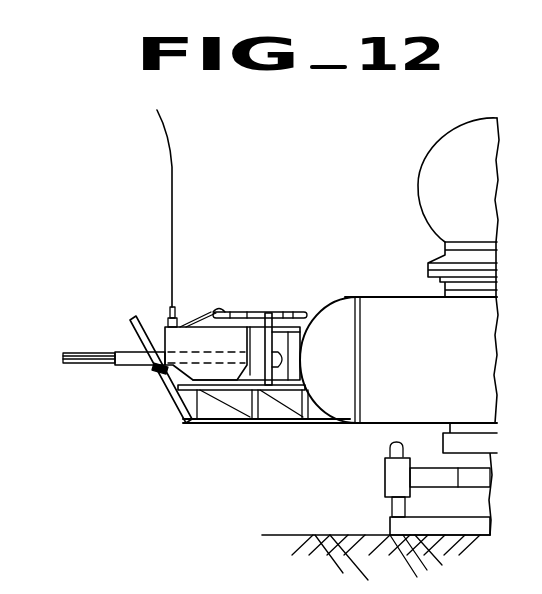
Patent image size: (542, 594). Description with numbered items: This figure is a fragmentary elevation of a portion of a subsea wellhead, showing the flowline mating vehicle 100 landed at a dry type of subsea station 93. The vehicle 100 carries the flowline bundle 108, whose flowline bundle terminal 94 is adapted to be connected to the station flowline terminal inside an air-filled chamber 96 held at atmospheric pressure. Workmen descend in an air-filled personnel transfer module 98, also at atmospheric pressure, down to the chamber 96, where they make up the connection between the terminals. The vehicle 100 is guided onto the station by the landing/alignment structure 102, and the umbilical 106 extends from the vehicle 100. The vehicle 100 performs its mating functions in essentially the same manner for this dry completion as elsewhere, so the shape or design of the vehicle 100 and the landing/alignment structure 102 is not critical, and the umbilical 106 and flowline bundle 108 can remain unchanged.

The subsea station 93 is at (360, 444).
The flowline bundle terminal 94 is at (255, 358).
The air-filled chamber 96 is at (463, 368).
The personnel transfer module 98 is at (485, 193).
The flowline mating vehicle 100 is at (170, 368).
The landing/alignment structure 102 is at (178, 405).
The umbilical 106 is at (172, 148).
The flowline bundle 108 is at (92, 353).